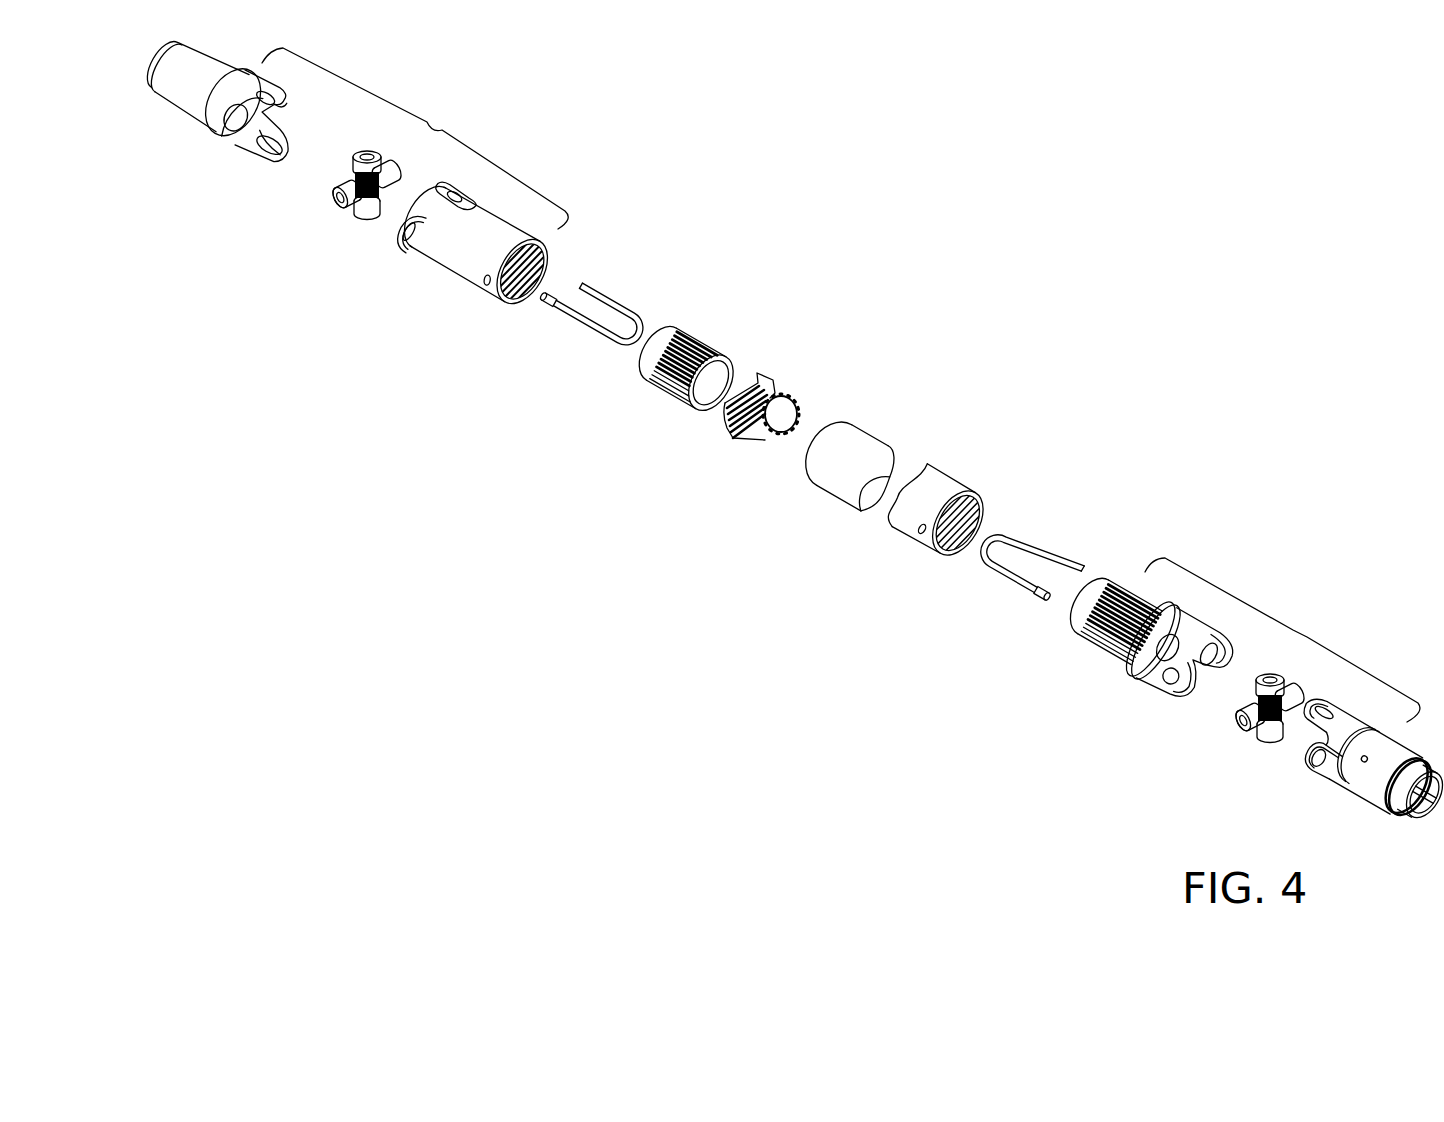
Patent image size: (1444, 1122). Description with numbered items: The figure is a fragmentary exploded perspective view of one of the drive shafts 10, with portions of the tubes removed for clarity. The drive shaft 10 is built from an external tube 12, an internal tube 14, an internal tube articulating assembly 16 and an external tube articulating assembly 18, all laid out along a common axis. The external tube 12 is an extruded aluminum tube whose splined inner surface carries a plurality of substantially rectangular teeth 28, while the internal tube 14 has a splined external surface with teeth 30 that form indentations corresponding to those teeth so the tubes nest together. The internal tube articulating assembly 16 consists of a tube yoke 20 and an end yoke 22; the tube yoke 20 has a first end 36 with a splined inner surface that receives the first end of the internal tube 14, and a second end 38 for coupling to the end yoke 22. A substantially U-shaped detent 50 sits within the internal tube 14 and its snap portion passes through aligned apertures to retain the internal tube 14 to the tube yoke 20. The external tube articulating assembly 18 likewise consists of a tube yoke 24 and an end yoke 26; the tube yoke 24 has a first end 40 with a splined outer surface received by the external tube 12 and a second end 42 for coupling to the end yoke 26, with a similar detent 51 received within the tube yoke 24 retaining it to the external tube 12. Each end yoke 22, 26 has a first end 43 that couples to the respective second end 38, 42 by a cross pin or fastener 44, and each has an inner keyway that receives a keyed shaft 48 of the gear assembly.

The drive shaft 10 is at (906, 99).
The external tube 12 is at (877, 427).
The internal tube 14 is at (707, 333).
The internal tube articulating assembly 16 is at (415, 138).
The external tube articulating assembly 18 is at (1282, 640).
The tube yoke 20 is at (462, 260).
The end yoke 22 is at (207, 130).
The tube yoke 24 is at (1150, 650).
The end yoke 26 is at (1337, 760).
The teeth 28 is at (950, 534).
The teeth 30 is at (768, 426).
The first end 36 is at (528, 303).
The second end 38 is at (400, 227).
The first end 40 is at (1080, 625).
The second end 42 is at (1187, 693).
The first end 43 is at (277, 163).
The cross pin 44 is at (337, 203).
The keyed shaft 48 is at (152, 92).
The detent 50 is at (614, 292).
The detent 51 is at (1057, 545).